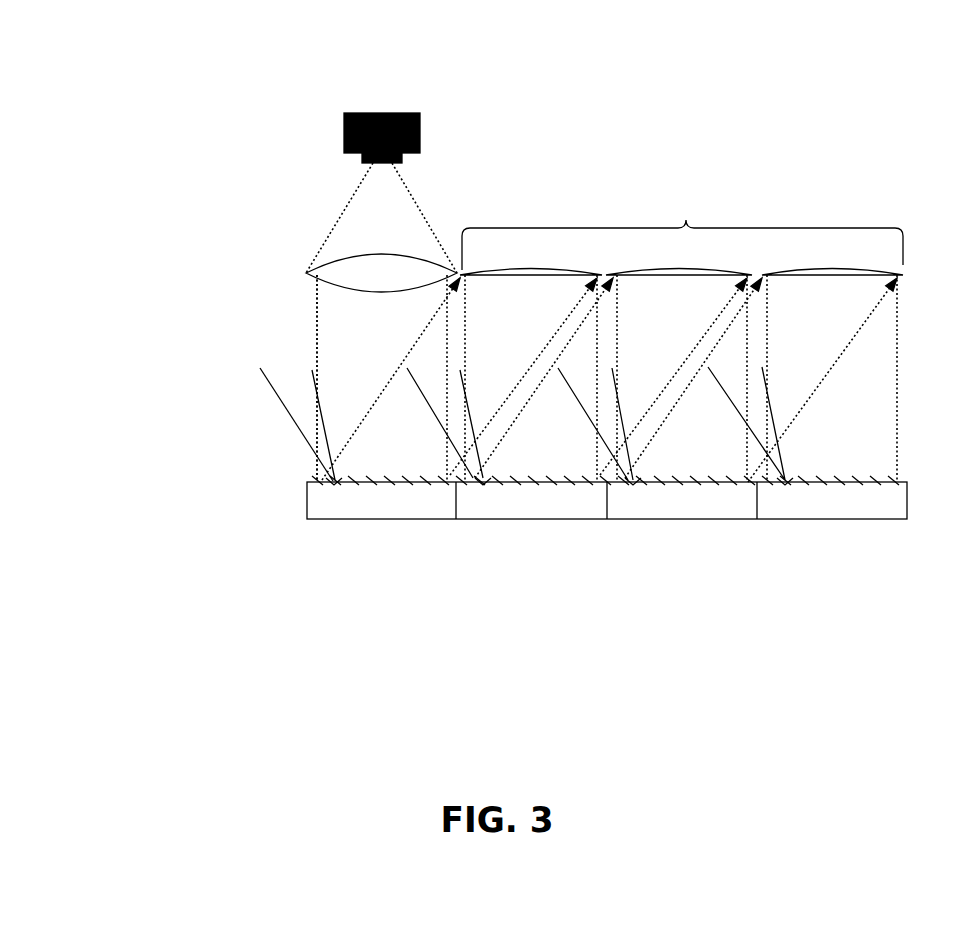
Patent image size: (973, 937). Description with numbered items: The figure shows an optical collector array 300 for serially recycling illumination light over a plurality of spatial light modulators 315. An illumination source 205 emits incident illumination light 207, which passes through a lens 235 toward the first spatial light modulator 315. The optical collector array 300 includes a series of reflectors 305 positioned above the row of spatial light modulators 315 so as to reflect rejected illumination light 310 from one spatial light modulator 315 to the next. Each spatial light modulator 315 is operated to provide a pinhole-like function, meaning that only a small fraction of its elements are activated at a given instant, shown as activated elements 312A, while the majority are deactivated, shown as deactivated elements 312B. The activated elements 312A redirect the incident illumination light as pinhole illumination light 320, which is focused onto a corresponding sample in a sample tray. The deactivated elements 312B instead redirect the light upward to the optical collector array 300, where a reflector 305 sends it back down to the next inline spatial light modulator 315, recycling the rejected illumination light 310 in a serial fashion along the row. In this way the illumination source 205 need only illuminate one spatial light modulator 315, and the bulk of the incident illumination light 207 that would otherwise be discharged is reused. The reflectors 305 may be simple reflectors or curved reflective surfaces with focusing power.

The illumination source 205 is at (353, 113).
The lens 235 is at (368, 288).
The incident illumination light 207 is at (316, 320).
The pinhole illumination light 320 is at (263, 407).
The optical collector array 300 is at (699, 214).
The reflector 305 is at (558, 270).
The spatial light modulator 315 is at (350, 514).
The activated element 312A is at (333, 492).
The deactivated element 312B is at (732, 490).
The rejected illumination light 310 is at (372, 422).